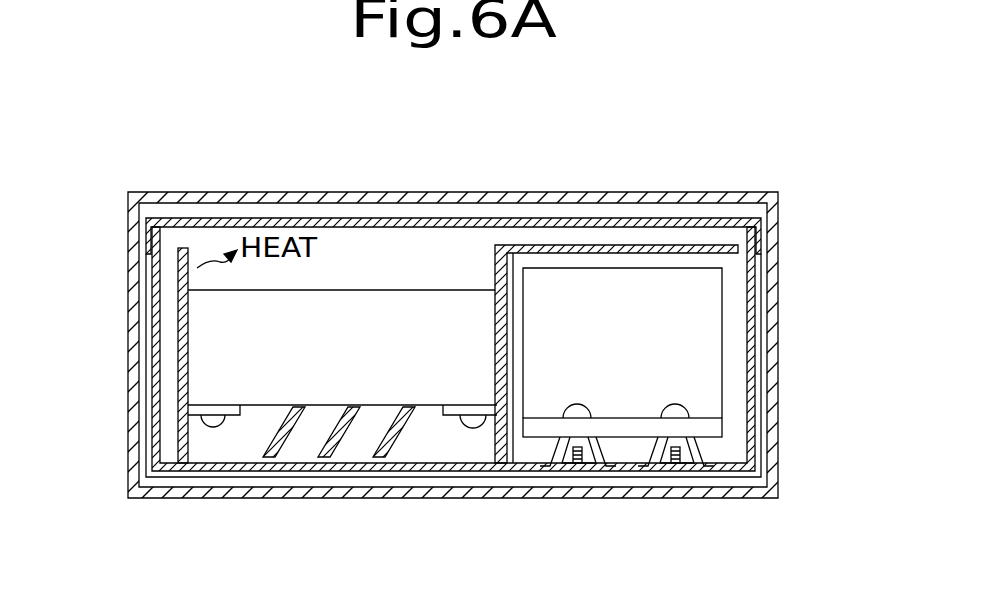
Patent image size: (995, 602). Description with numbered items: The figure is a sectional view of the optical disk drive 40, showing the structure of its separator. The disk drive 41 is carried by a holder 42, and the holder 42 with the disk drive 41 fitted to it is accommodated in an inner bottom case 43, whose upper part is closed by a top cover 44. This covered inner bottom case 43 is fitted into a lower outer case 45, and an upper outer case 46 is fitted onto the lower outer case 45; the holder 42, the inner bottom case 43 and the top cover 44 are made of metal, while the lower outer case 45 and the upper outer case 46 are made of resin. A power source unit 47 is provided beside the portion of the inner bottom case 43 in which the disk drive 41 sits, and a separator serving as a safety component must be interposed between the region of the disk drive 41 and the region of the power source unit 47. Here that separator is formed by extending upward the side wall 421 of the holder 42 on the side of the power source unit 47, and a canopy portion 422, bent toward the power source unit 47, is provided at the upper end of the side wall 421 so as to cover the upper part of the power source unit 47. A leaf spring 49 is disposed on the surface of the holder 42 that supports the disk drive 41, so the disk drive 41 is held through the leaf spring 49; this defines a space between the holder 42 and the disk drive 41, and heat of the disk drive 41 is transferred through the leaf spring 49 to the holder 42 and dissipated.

The optical disk drive 40 is at (487, 315).
The disk drive 41 is at (335, 312).
The holder 42 is at (183, 366).
The inner bottom case 43 is at (154, 332).
The top cover 44 is at (503, 222).
The lower outer case 45 is at (725, 492).
The upper outer case 46 is at (778, 337).
The power source unit 47 is at (622, 402).
The leaf spring 49 is at (405, 440).
The side wall 421 is at (510, 335).
The canopy portion 422 is at (693, 244).